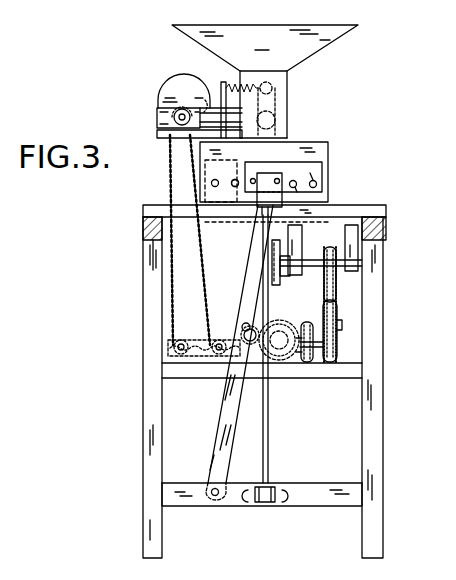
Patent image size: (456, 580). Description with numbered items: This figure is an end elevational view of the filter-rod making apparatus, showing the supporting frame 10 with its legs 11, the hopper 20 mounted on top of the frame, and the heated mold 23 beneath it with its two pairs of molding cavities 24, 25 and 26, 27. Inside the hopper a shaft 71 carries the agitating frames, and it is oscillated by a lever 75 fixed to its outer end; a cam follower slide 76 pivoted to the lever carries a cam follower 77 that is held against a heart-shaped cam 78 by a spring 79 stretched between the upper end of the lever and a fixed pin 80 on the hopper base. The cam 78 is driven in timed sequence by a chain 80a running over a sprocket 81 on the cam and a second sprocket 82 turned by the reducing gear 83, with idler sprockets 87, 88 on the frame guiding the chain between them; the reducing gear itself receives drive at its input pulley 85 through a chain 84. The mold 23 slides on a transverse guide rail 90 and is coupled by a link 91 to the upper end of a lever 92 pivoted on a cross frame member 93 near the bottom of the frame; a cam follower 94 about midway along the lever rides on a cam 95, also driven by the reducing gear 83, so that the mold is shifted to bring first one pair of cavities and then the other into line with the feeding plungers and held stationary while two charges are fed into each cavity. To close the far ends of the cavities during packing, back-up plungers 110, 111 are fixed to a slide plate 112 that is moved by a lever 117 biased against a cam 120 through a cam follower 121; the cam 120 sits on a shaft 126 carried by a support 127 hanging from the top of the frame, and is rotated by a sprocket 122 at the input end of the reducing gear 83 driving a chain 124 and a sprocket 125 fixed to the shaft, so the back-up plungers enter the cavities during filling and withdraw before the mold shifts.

The supporting frame 10 is at (135, 359).
The leg 11 is at (144, 418).
The hopper 20 is at (298, 82).
The heated mold 23 is at (322, 172).
The molding cavity 24 is at (222, 174).
The molding cavity 25 is at (235, 179).
The molding cavity 26 is at (307, 176).
The molding cavity 27 is at (302, 191).
The shaft 71 is at (290, 134).
The lever 75 is at (288, 100).
The cam follower slide 76 is at (157, 120).
The cam follower 77 is at (205, 110).
The cam 78 is at (160, 100).
The spring 79 is at (251, 84).
The fixed pin 80 is at (223, 83).
The chain 80a is at (171, 180).
The sprocket 81 is at (181, 110).
The second sprocket 82 is at (301, 332).
The reducing gear 83 is at (292, 322).
The chain 84 is at (306, 362).
The input pulley 85 is at (303, 347).
The idler sprocket 87 is at (185, 339).
The idler sprocket 88 is at (222, 339).
The transverse guide rail 90 is at (358, 212).
The link 91 is at (300, 232).
The lever 92 is at (216, 430).
The cross frame member 93 is at (313, 507).
The cam follower 94 is at (244, 328).
The cam 95 is at (268, 320).
The back-up plunger 110 is at (278, 178).
The back-up plunger 111 is at (253, 185).
The slide plate 112 is at (268, 188).
The lever 117 is at (268, 436).
The cam 120 is at (262, 250).
The cam follower 121 is at (270, 268).
The sprocket 122 is at (337, 364).
The chain 124 is at (336, 318).
The sprocket 125 is at (336, 278).
The shaft 126 is at (313, 268).
The support 127 is at (345, 241).